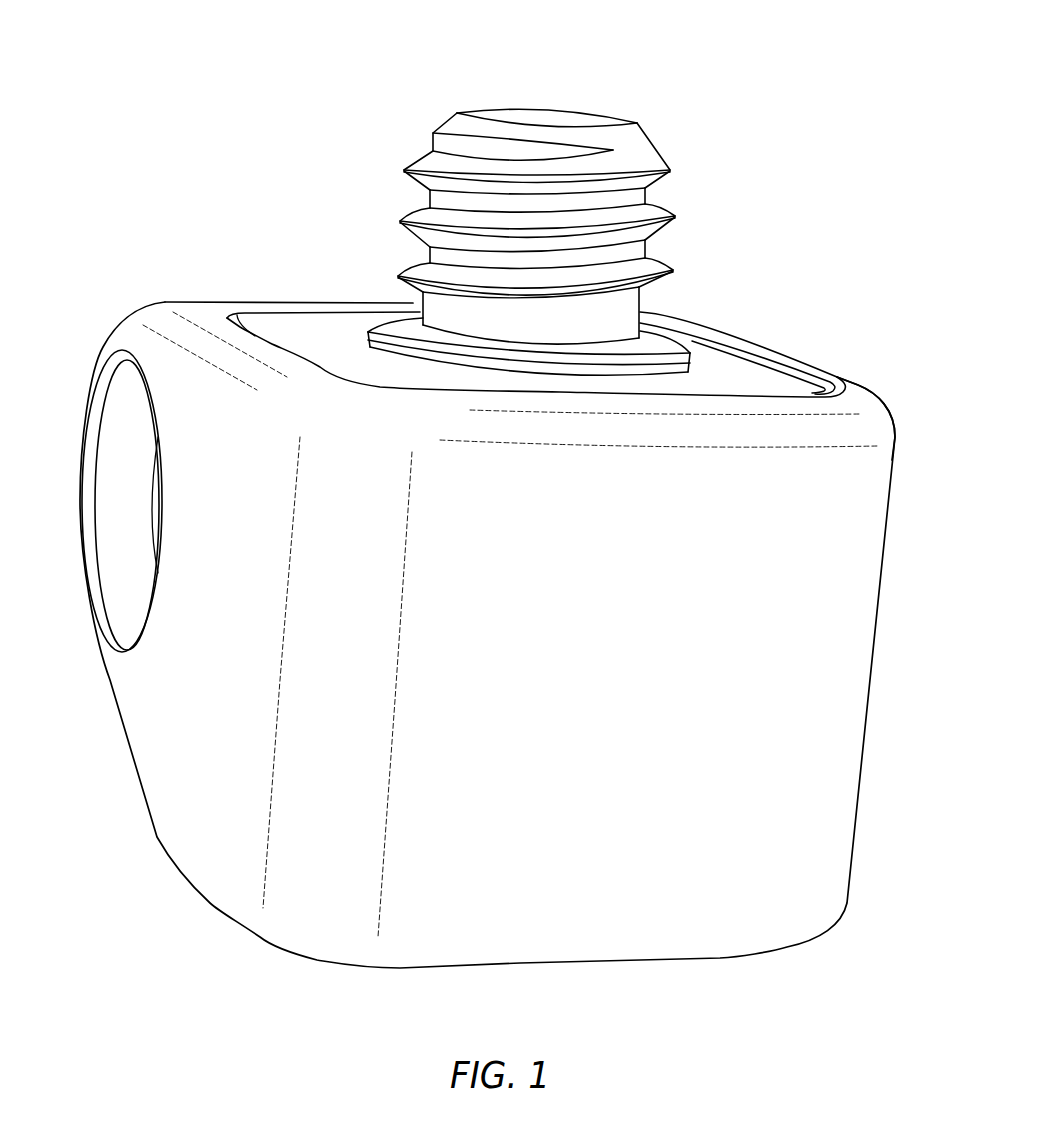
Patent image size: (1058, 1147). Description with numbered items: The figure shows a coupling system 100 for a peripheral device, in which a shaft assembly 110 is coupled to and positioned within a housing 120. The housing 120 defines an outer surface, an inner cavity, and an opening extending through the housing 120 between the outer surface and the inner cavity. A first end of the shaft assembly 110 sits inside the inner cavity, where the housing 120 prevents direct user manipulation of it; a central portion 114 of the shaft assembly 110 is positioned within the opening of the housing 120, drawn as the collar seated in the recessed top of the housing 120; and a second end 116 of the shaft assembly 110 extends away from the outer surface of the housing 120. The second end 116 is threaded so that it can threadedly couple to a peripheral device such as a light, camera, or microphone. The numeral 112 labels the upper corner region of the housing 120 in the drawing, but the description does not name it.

The coupling system 100 is at (170, 78).
The shaft assembly 110 is at (682, 107).
The shoulder / top wall of body 112 is at (853, 397).
The central portion 114 is at (686, 342).
The second end 116 is at (667, 205).
The housing 120 is at (150, 275).